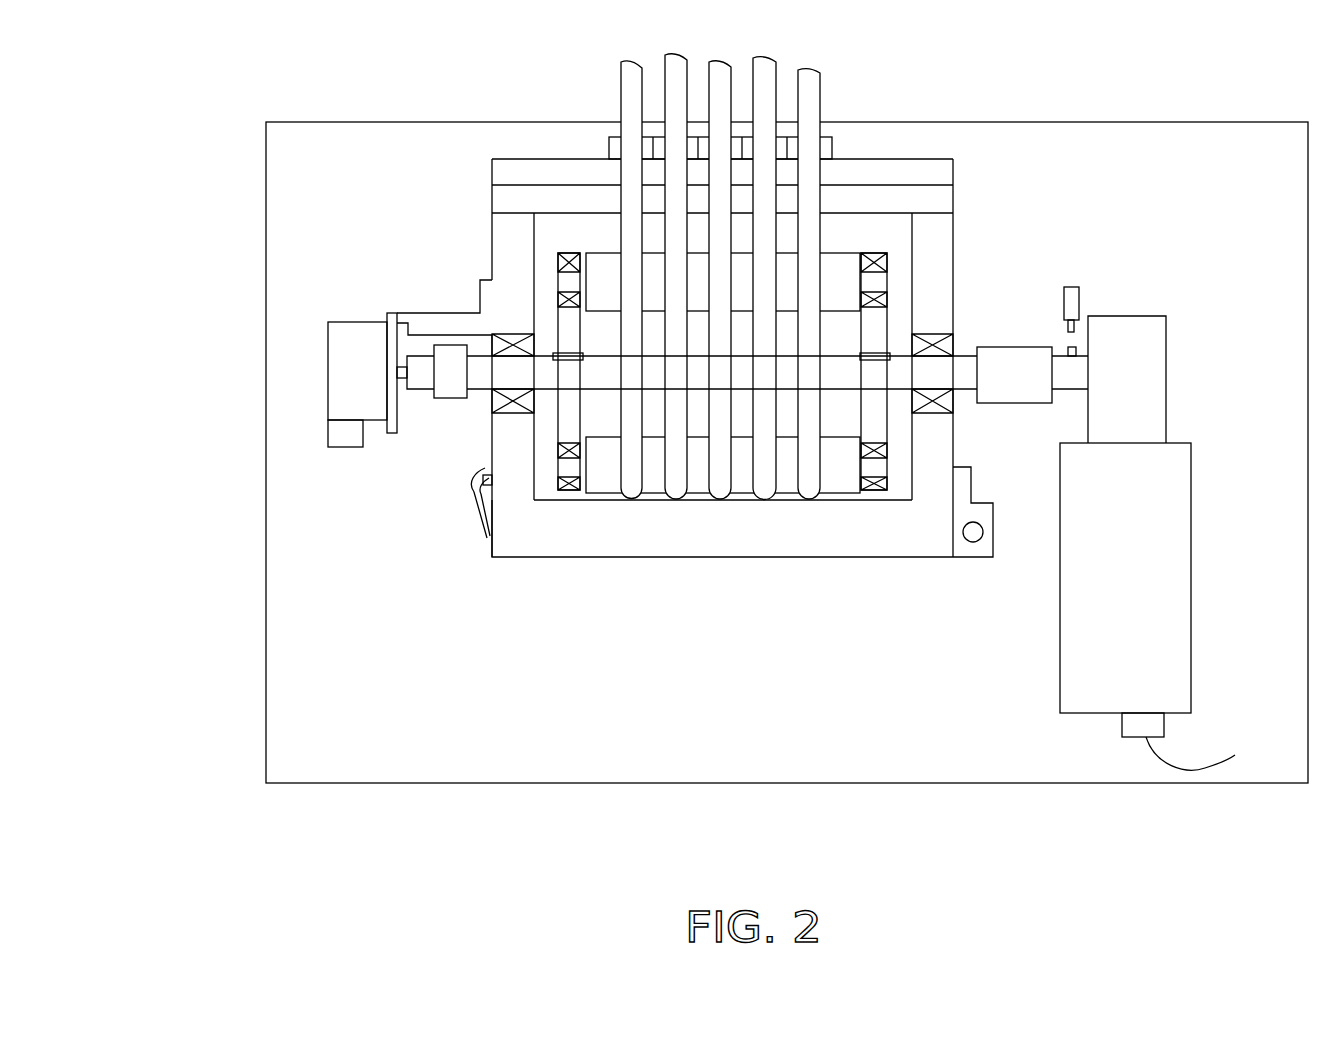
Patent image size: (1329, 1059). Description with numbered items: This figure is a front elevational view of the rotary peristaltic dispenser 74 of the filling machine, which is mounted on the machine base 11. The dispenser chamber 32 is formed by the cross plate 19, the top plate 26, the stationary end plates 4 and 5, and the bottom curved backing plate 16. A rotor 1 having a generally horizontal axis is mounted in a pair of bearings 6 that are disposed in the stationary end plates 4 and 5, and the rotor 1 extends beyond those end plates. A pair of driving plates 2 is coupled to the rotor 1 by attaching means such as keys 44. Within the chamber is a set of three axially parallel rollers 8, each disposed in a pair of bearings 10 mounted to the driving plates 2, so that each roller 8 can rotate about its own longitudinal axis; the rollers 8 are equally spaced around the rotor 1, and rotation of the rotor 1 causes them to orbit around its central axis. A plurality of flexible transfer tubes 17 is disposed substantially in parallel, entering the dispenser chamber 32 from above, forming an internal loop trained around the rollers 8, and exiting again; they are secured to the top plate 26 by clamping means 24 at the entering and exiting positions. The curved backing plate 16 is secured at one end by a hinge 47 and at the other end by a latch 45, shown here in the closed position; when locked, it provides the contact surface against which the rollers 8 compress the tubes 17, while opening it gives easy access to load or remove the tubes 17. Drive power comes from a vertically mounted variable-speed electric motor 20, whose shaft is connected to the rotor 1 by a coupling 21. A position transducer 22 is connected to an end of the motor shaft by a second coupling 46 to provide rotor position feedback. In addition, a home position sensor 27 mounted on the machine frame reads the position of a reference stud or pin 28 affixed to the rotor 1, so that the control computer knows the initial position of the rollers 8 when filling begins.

The rotor 1 is at (492, 377).
The driving plates 2 is at (563, 320).
The stationary end plate 4 is at (937, 272).
The stationary end plate 5 is at (510, 257).
The bearings 6 is at (495, 398).
The rollers 8 is at (847, 480).
The bearings 10 is at (562, 253).
The machine base 11 is at (272, 682).
The curved backing plate 16 is at (783, 542).
The flexible transfer tubes 17 is at (670, 493).
The cross plate 19 is at (947, 202).
The electric motor 20 is at (1165, 523).
The coupling 21 is at (1031, 383).
The position transducer 22 is at (363, 337).
The clamping means 24 is at (813, 147).
The top plate 26 is at (942, 170).
The home position sensor 27 is at (1073, 293).
The reference stud or pin 28 is at (1068, 350).
The dispenser chamber 32 is at (583, 225).
The keys 44 is at (567, 360).
The latch 45 is at (482, 513).
The coupling 46 is at (445, 388).
The hinge 47 is at (973, 542).
The rotary peristaltic dispenser 74 is at (323, 498).